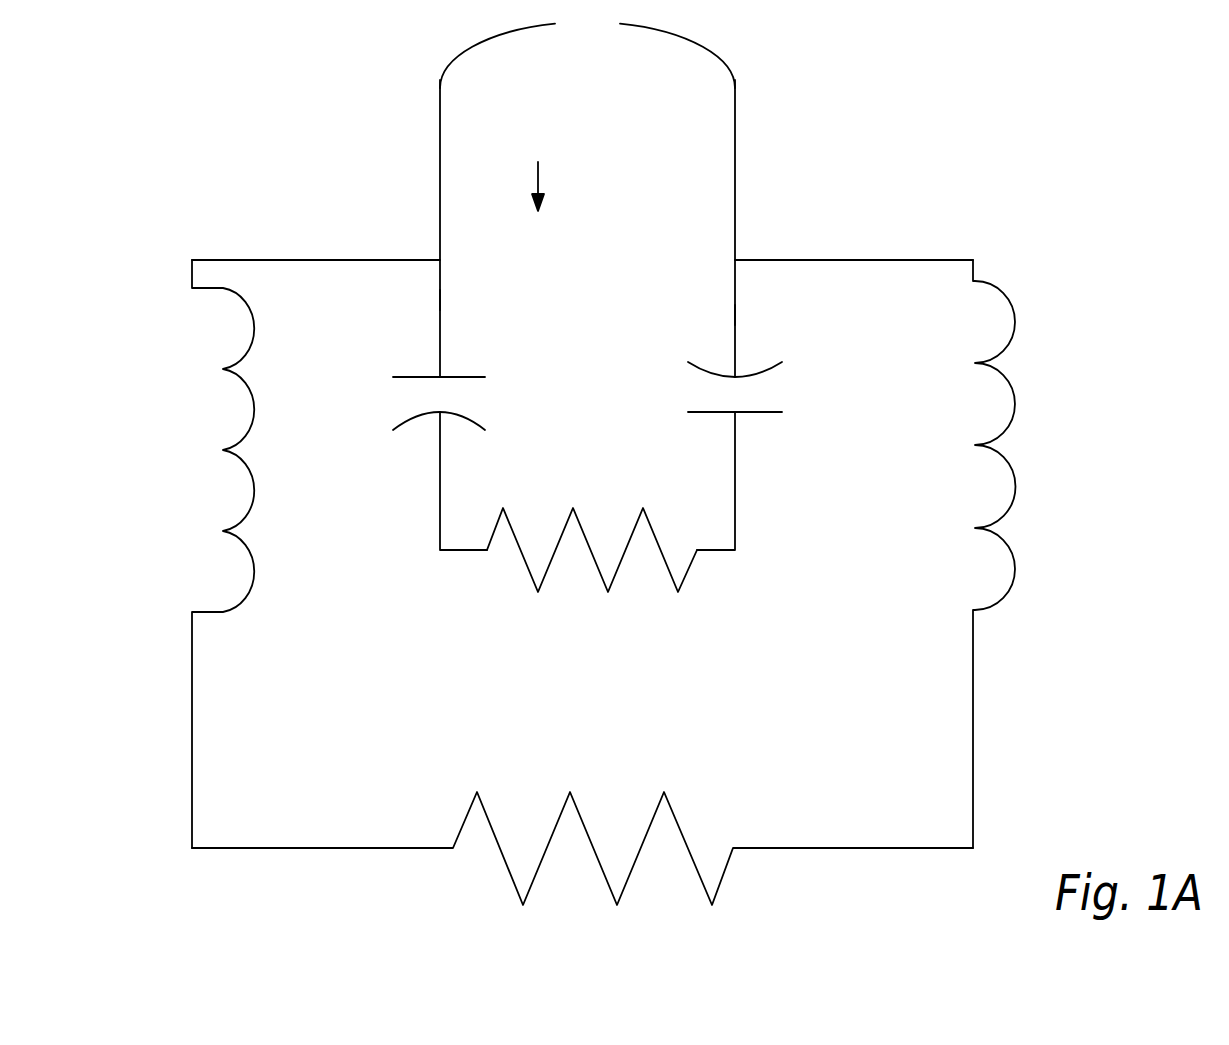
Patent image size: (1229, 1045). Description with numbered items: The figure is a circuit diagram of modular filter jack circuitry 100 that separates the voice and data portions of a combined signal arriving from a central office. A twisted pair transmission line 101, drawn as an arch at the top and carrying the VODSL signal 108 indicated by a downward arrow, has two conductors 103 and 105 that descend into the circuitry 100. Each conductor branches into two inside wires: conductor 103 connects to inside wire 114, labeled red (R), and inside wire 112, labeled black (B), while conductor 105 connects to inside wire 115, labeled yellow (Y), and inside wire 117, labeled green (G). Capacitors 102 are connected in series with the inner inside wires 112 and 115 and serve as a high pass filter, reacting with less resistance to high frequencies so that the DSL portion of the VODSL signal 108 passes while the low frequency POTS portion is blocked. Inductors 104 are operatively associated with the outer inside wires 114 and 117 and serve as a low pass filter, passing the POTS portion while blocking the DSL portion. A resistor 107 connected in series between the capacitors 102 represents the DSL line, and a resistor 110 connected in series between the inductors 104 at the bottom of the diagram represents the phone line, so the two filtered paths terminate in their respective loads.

The modular filter jack circuitry 100 is at (938, 172).
The twisted pair transmission line 101 is at (587, 64).
The capacitors 102 is at (457, 375).
The conductor 103 is at (440, 118).
The inductors 104 is at (265, 450).
The conductor 105 is at (735, 158).
The resistor 107 is at (527, 565).
The VODSL signal 108 is at (660, 160).
The resistor 110 is at (670, 802).
The inside wire 112 is at (440, 300).
The inside wire 114 is at (260, 262).
The inside wire 115 is at (735, 315).
The inside wire 117 is at (780, 260).